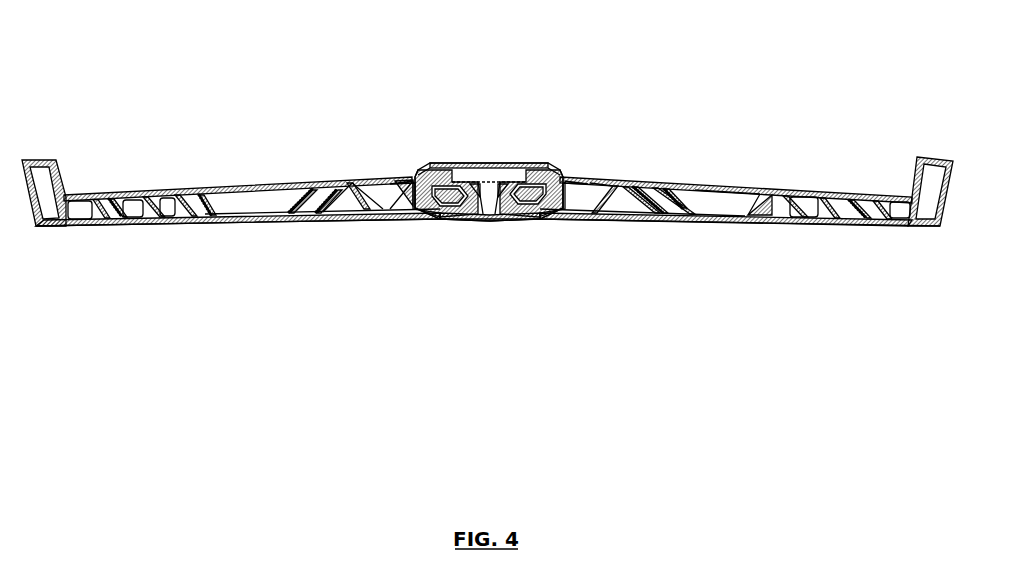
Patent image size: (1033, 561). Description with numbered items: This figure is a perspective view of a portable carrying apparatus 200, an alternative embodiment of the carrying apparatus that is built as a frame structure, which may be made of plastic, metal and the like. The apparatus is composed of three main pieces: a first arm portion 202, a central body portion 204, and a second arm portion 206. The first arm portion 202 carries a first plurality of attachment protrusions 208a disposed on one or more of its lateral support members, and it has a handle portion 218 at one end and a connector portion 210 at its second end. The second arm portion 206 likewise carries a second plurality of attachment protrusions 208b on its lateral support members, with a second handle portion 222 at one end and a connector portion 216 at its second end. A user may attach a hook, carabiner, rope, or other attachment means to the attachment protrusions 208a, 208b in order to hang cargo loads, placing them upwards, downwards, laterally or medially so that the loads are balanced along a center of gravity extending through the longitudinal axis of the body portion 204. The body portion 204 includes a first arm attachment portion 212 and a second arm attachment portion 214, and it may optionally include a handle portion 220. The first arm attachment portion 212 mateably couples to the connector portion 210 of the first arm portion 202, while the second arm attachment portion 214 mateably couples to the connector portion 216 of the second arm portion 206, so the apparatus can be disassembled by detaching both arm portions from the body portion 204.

The portable carrying apparatus 200 is at (276, 79).
The first arm portion 202 is at (229, 174).
The body portion 204 is at (471, 139).
The second arm portion 206 is at (750, 173).
The first plurality of attachment protrusions 208a is at (210, 203).
The second plurality of attachment protrusions 208b is at (770, 200).
The connector portion 210 is at (430, 198).
The first arm attachment portion 212 is at (453, 197).
The second arm attachment portion 214 is at (533, 195).
The connector portion 216 is at (542, 200).
The handle portion 218 is at (50, 163).
The handle portion 220 is at (500, 176).
The second handle portion 222 is at (933, 165).